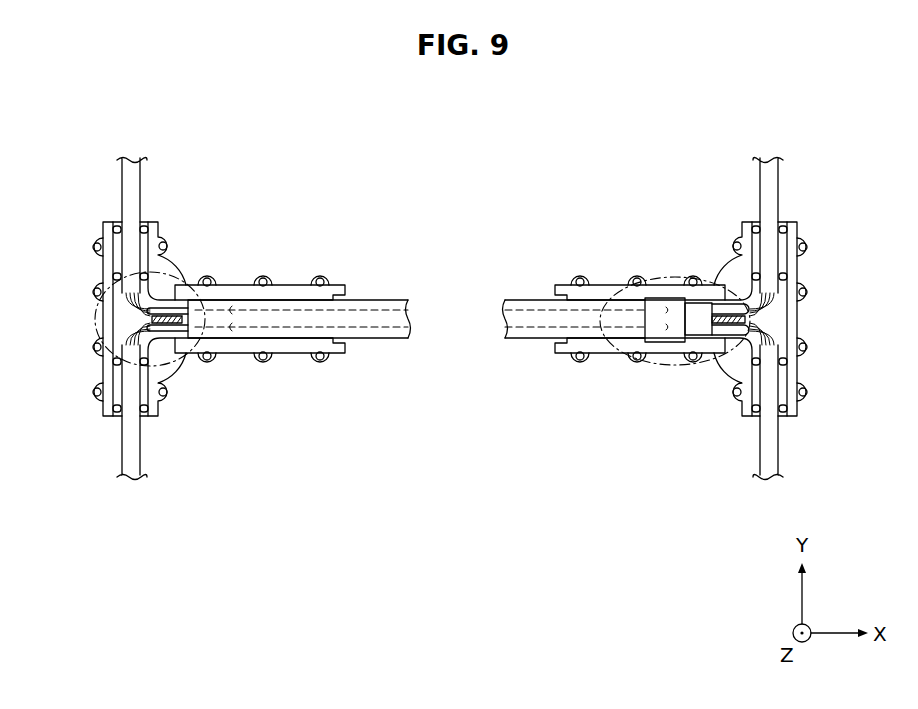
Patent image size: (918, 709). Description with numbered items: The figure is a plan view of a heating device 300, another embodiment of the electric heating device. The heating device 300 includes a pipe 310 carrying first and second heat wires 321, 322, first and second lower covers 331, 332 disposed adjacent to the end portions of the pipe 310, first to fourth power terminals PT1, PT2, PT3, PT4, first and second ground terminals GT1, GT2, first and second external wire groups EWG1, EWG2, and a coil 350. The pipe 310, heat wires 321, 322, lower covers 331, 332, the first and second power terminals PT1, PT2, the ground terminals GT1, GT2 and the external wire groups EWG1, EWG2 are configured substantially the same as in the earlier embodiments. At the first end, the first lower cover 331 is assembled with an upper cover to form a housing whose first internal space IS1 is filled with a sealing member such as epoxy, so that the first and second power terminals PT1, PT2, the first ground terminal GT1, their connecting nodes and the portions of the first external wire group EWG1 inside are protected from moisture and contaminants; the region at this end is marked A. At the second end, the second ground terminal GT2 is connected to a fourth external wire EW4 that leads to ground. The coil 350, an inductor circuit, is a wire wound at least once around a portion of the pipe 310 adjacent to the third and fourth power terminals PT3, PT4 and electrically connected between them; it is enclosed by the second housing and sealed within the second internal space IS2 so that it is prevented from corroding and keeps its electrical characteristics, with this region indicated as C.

The heating device 300 is at (684, 146).
The pipe 310 is at (364, 299).
The first heat wire 321 is at (393, 308).
The second heat wire 322 is at (384, 329).
The first lower cover 331 is at (237, 284).
The second lower cover 332 is at (592, 284).
The coil 350 is at (668, 343).
The first external wire group EWG1 is at (141, 176).
The second external wire group EWG2 is at (779, 184).
The first ground terminal GT1 is at (170, 303).
The second ground terminal GT2 is at (733, 298).
The first power terminal PT1 is at (186, 300).
The second power terminal PT2 is at (166, 353).
The third power terminal PT3 is at (712, 298).
The fourth power terminal PT4 is at (735, 353).
The first internal space IS1 is at (110, 259).
The second internal space IS2 is at (792, 258).
The fourth external wire EW4 is at (772, 306).
The region A is at (95, 312).
The region C is at (652, 364).